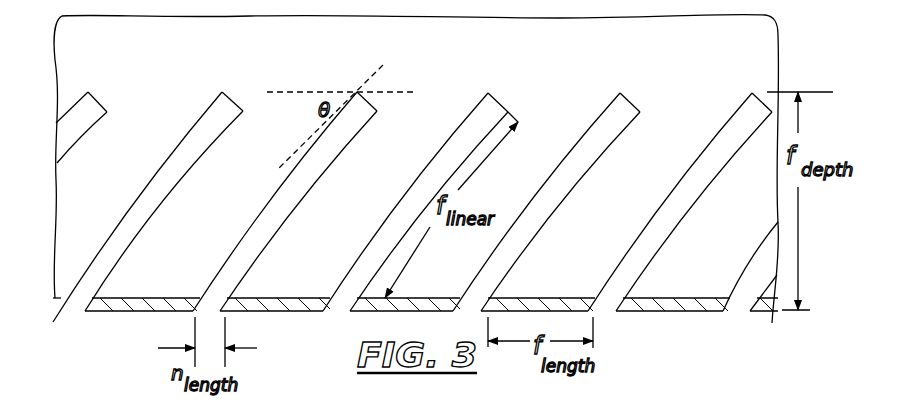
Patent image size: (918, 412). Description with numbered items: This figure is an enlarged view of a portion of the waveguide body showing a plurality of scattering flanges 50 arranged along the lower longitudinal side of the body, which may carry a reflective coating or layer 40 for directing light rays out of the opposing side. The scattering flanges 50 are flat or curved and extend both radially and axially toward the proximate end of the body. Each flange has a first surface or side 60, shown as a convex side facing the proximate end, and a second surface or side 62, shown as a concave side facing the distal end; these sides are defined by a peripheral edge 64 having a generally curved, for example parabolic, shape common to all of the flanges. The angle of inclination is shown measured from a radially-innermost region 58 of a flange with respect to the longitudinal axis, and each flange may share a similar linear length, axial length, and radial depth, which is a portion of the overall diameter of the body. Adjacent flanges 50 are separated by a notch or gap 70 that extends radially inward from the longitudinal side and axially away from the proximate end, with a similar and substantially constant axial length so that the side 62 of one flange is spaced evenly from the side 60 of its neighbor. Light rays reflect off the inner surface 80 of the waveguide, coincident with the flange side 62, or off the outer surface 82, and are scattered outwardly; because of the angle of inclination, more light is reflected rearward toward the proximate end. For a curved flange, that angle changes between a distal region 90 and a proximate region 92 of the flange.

The reflective coating or layer 40 is at (130, 303).
The scattering flanges 50 is at (167, 225).
The radially-innermost region 58 is at (97, 100).
The first surface or side 60 is at (222, 133).
The second surface or side 62 is at (266, 196).
The peripheral edge 64 is at (658, 312).
The notch or gap 70 is at (405, 212).
The inner surface 80 is at (720, 128).
The outer surface 82 is at (707, 174).
The distal region 90 is at (486, 265).
The proximate region 92 is at (579, 142).